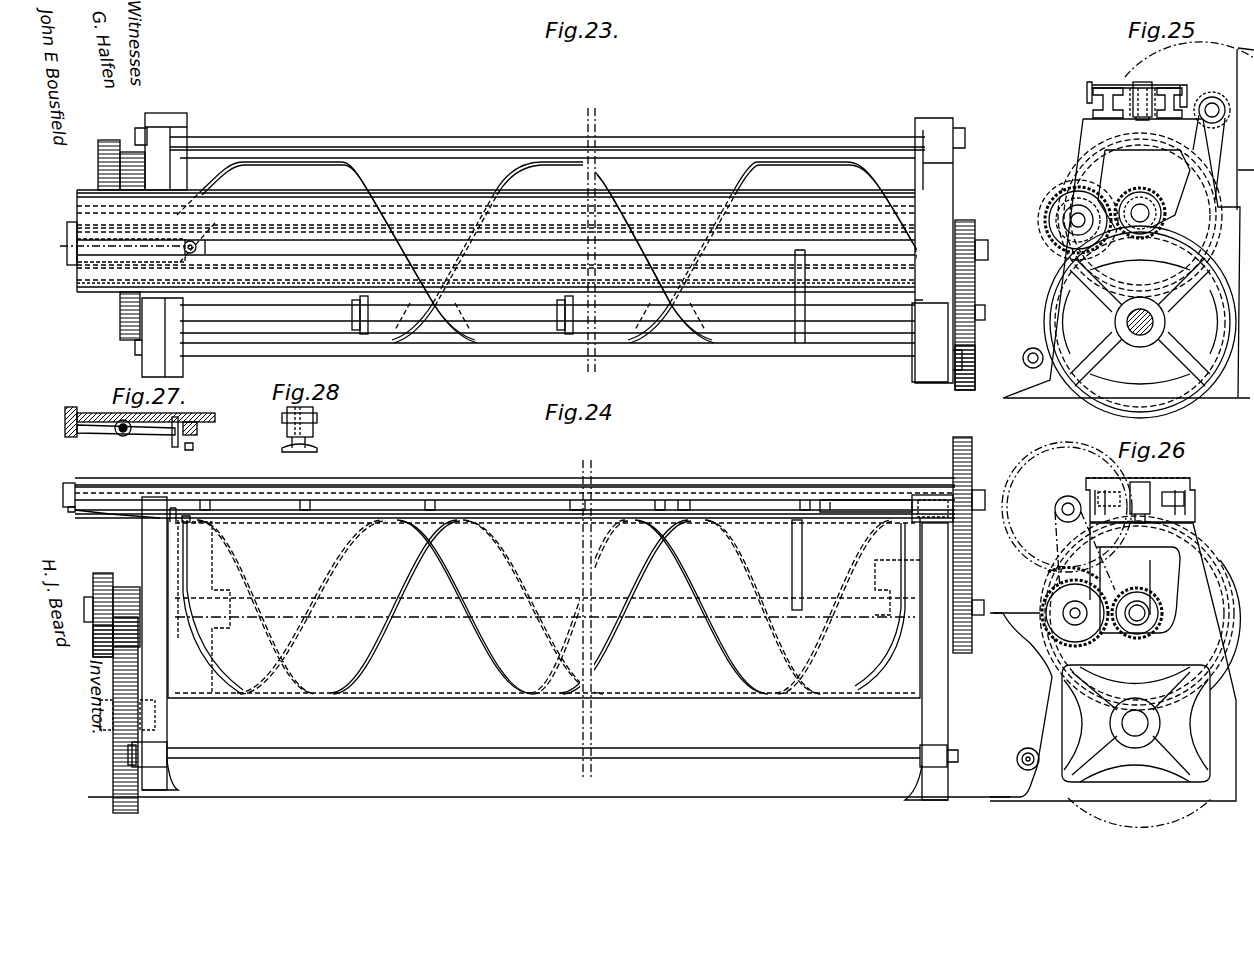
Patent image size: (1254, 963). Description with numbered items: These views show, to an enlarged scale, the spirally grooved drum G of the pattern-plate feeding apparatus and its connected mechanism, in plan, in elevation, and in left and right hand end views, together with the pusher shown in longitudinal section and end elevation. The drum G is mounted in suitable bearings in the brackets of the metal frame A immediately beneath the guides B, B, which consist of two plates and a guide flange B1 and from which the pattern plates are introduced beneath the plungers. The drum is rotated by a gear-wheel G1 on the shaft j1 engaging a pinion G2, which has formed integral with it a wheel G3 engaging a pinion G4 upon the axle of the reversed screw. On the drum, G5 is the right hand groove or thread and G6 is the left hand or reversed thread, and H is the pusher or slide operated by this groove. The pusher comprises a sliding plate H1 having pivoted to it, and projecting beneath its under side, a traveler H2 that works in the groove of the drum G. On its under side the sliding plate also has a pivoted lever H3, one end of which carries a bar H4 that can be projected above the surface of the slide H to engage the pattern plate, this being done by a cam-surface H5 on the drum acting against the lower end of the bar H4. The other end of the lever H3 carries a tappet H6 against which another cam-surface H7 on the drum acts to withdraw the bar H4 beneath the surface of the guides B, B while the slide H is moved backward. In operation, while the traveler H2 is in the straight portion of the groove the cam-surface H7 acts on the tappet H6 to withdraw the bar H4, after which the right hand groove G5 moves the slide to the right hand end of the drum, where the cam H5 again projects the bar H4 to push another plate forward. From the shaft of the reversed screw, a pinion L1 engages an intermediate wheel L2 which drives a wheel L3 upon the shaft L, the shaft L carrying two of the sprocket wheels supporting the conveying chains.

In FIG. 24, the metal frame A is at (955, 716).
In FIG. 25, the metal frame A is at (1126, 224).
In FIG. 26, the metal frame A is at (1113, 662).
In FIG. 25, the guides B is at (1125, 90).
In FIG. 26, the guides B is at (1145, 485).
In FIG. 25, the guide flange B1 is at (1088, 86).
In FIG. 26, the guide flange B1 is at (1195, 492).
In FIG. 23, the drum G is at (539, 252).
In FIG. 24, the drum G is at (546, 607).
In FIG. 25, the drum G is at (1078, 150).
In FIG. 26, the drum G is at (1225, 600).
In FIG. 23, the gear-wheel G1 is at (120, 318).
In FIG. 24, the gear-wheel G1 is at (113, 666).
In FIG. 25, the gear-wheel G1 is at (1045, 312).
In FIG. 26, the gear-wheel G1 is at (1040, 714).
In FIG. 23, the pinion G2 is at (128, 152).
In FIG. 24, the pinion G2 is at (126, 580).
In FIG. 25, the pinion G2 is at (1048, 210).
In FIG. 23, the wheel G3 is at (108, 142).
In FIG. 24, the wheel G3 is at (93, 632).
In FIG. 25, the wheel G3 is at (1046, 224).
In FIG. 24, the pinion G4 is at (102, 573).
In FIG. 25, the pinion G4 is at (1141, 190).
In FIG. 23, the right hand groove G5 is at (368, 198).
In FIG. 24, the right hand groove G5 is at (480, 640).
In FIG. 23, the left hand groove G6 is at (512, 176).
In FIG. 24, the left hand groove G6 is at (378, 648).
In FIG. 23, the pusher H is at (222, 247).
In FIG. 27, the pusher H is at (126, 442).
In FIG. 23, the sliding plate H1 is at (77, 225).
In FIG. 25, the sliding plate H1 is at (1136, 80).
In FIG. 27, the sliding plate H1 is at (88, 412).
In FIG. 28, the sliding plate H1 is at (318, 416).
In FIG. 26, the traveler H2 is at (1128, 548).
In FIG. 27, the traveler H2 is at (195, 448).
In FIG. 23, the pivoted lever H3 is at (80, 280).
In FIG. 27, the pivoted lever H3 is at (132, 434).
In FIG. 24, the bar H4 is at (72, 485).
In FIG. 25, the bar H4 is at (1145, 82).
In FIG. 26, the bar H4 is at (1152, 490).
In FIG. 27, the bar H4 is at (66, 410).
In FIG. 28, the bar H4 is at (285, 413).
In FIG. 24, the cam-surface H5 is at (798, 560).
In FIG. 26, the cam-surface H5 is at (1050, 578).
In FIG. 24, the tappet H6 is at (165, 518).
In FIG. 27, the tappet H6 is at (175, 447).
In FIG. 24, the cam-surface H7 is at (176, 565).
In FIG. 25, the cam-surface H7 is at (1168, 192).
In FIG. 23, the shaft L is at (745, 322).
In FIG. 24, the shaft L is at (850, 500).
In FIG. 25, the shaft L is at (1214, 96).
In FIG. 26, the shaft L is at (1068, 498).
In FIG. 23, the pinion L1 is at (967, 232).
In FIG. 26, the pinion L1 is at (1130, 628).
In FIG. 26, the intermediate wheel L2 is at (1045, 605).
In FIG. 23, the wheel L3 is at (972, 355).
In FIG. 24, the wheel L3 is at (972, 460).
In FIG. 25, the wheel L3 is at (1189, 89).
In FIG. 26, the wheel L3 is at (1017, 471).
In FIG. 24, the shaft j1 is at (105, 705).
In FIG. 25, the shaft j1 is at (1160, 322).
In FIG. 26, the shaft j1 is at (1128, 740).